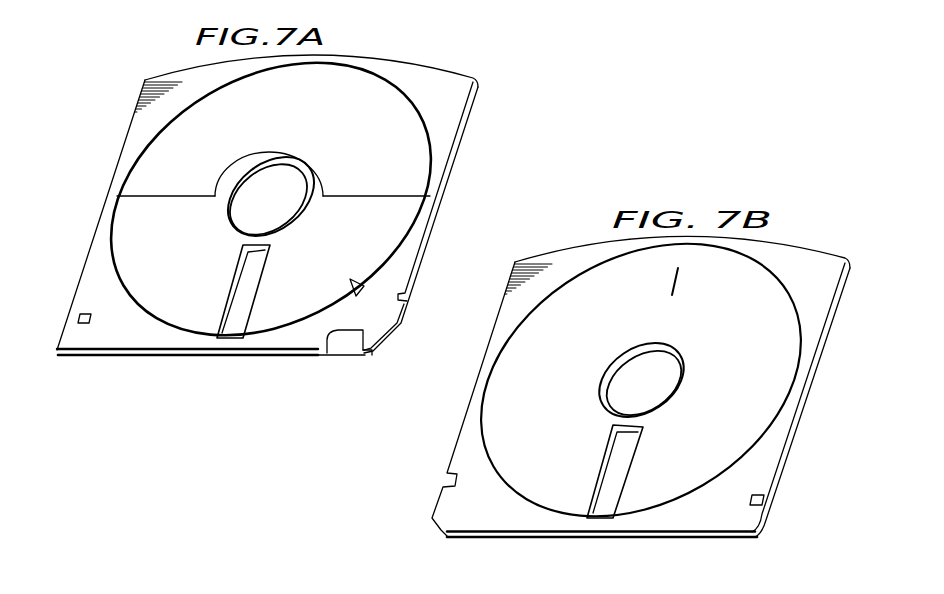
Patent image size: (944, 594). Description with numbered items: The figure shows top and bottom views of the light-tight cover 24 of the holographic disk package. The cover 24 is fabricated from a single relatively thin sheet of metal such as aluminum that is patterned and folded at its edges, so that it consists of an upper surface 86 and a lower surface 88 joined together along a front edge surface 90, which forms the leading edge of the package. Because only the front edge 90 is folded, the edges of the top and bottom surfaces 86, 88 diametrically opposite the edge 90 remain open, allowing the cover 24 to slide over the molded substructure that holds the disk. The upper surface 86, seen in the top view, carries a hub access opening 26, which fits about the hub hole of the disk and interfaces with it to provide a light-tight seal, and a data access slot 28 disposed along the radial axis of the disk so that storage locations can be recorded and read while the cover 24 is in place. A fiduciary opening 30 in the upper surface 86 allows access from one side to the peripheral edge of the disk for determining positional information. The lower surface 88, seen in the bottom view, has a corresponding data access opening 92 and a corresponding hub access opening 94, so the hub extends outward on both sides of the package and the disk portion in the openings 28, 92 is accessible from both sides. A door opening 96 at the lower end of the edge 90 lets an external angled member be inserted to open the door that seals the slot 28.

In FIG. 7A, the cover 24 is at (443, 82).
In FIG. 7A, the hub access opening 26 is at (277, 168).
In FIG. 7B, the hub access opening 26 is at (622, 368).
In FIG. 7A, the data access slot 28 is at (233, 300).
In FIG. 7B, the data access slot 28 is at (608, 467).
In FIG. 7A, the fiduciary opening 30 is at (355, 281).
In FIG. 7A, the upper surface 86 is at (465, 122).
In FIG. 7B, the upper surface 86 is at (803, 418).
In FIG. 7A, the lower surface 88 is at (455, 165).
In FIG. 7B, the lower surface 88 is at (807, 383).
In FIG. 7A, the front edge surface 90 is at (105, 357).
In FIG. 7B, the data access opening 92 is at (605, 450).
In FIG. 7B, the hub access opening 94 is at (622, 352).
In FIG. 7A, the door opening 96 is at (327, 342).